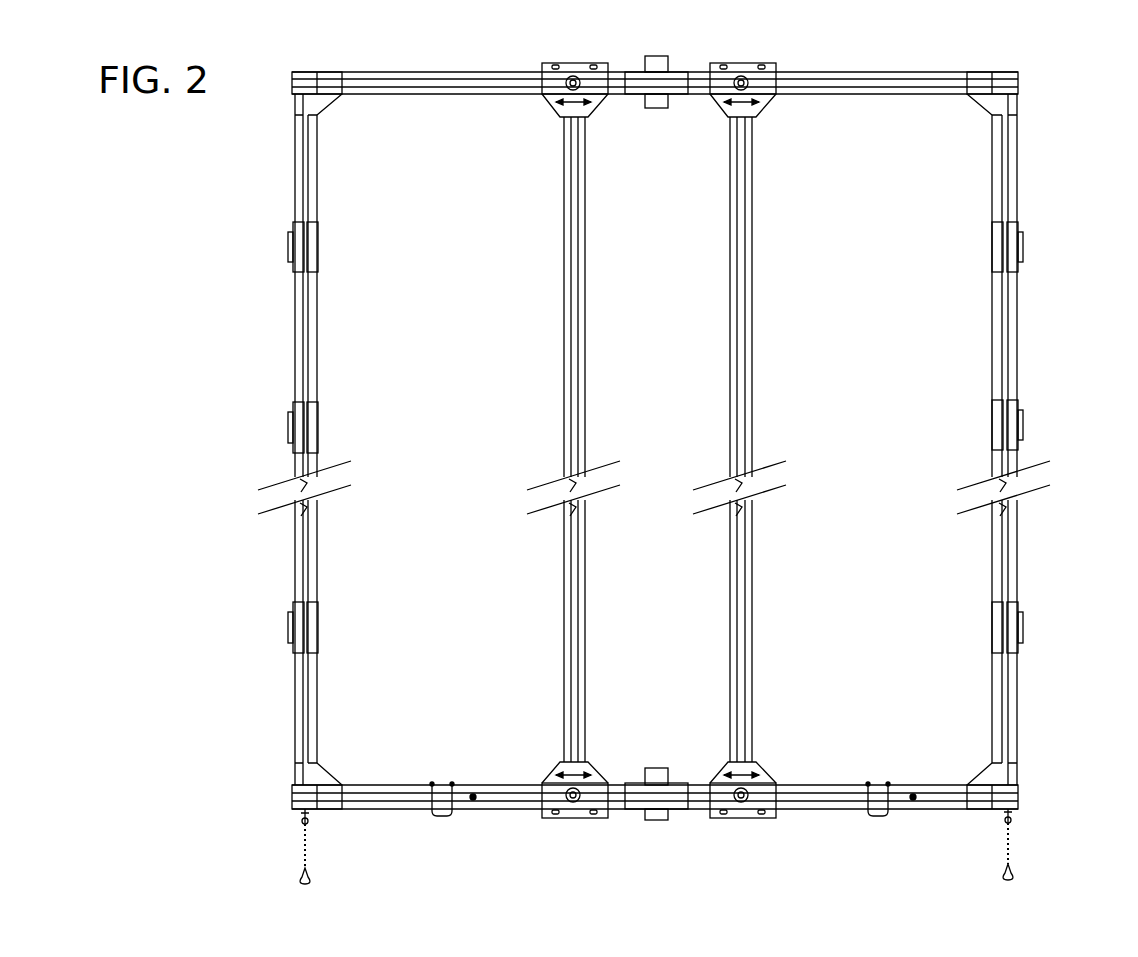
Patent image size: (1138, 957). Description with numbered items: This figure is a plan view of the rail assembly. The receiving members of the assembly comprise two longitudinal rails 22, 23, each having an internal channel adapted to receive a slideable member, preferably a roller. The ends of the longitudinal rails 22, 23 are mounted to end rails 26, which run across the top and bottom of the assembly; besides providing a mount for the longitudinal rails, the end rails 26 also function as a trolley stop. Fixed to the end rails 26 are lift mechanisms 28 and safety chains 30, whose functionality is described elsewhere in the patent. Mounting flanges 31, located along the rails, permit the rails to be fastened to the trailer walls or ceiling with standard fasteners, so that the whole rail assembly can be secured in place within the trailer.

The longitudinal rail 22 is at (573, 358).
The longitudinal rail 23 is at (1005, 308).
The end rail 26 is at (488, 85).
The lift mechanism 28 is at (442, 816).
The safety chain 30 is at (1015, 842).
The mounting flange 31 is at (1013, 405).